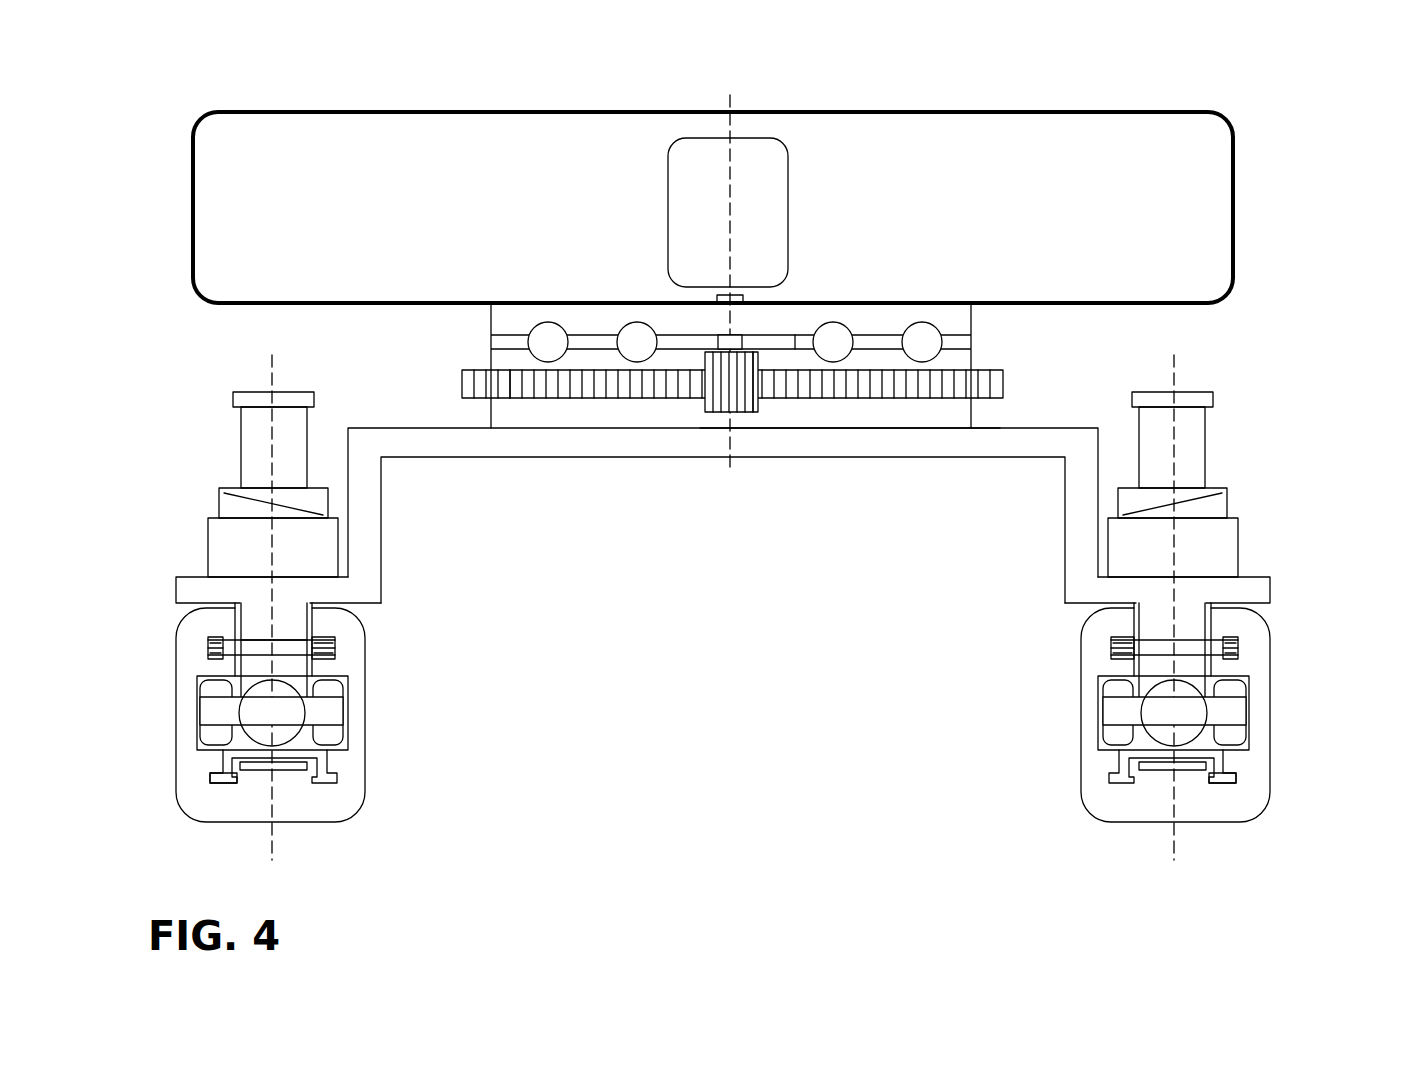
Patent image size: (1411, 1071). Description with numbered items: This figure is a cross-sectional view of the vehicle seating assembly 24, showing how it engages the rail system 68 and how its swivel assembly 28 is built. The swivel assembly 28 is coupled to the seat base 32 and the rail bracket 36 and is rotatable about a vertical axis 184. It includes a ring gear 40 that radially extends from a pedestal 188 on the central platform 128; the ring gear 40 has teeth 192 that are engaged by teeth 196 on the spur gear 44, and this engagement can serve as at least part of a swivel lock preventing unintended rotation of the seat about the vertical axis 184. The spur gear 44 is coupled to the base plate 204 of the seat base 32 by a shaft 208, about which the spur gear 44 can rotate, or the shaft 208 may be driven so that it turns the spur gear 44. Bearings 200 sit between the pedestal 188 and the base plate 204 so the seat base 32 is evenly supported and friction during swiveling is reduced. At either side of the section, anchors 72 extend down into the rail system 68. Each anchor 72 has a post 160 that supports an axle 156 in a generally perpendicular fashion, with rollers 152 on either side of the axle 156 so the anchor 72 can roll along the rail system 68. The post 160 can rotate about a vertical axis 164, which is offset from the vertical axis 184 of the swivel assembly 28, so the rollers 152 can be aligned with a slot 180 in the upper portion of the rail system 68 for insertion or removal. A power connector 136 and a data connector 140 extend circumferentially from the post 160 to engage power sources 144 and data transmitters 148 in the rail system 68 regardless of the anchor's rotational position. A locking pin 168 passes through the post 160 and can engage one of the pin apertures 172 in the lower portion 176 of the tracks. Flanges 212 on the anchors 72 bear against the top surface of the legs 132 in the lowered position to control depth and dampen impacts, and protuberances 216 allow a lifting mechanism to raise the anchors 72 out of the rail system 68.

The vehicle seating assembly 24 is at (721, 248).
The swivel assembly 28 is at (740, 297).
The seat base 32 is at (373, 296).
The rail bracket 36 is at (170, 572).
The ring gear 40 is at (460, 372).
The spur gear 44 is at (712, 412).
The rail system 68 is at (308, 726).
The anchors 72 is at (257, 429).
The central platform 128 is at (723, 509).
The legs 132 is at (200, 577).
The power connector 136 is at (312, 643).
The data connector 140 is at (295, 658).
The power sources 144 is at (208, 640).
The data transmitters 148 is at (208, 650).
The rollers 152 is at (207, 688).
The axle 156 is at (338, 708).
The post 160 is at (236, 461).
The vertical axis 164 is at (268, 358).
The locking pin 168 is at (290, 775).
The pin apertures 172 is at (223, 753).
The lower portion 176 is at (225, 783).
The slot 180 is at (1245, 588).
The vertical axis 184 is at (735, 100).
The pedestal 188 is at (878, 415).
The teeth 192 is at (530, 392).
The teeth 196 is at (745, 405).
The bearings 200 is at (548, 332).
The base plate 204 is at (793, 315).
The shaft 208 is at (728, 296).
The flanges 212 is at (209, 528).
The protuberances 216 is at (316, 400).